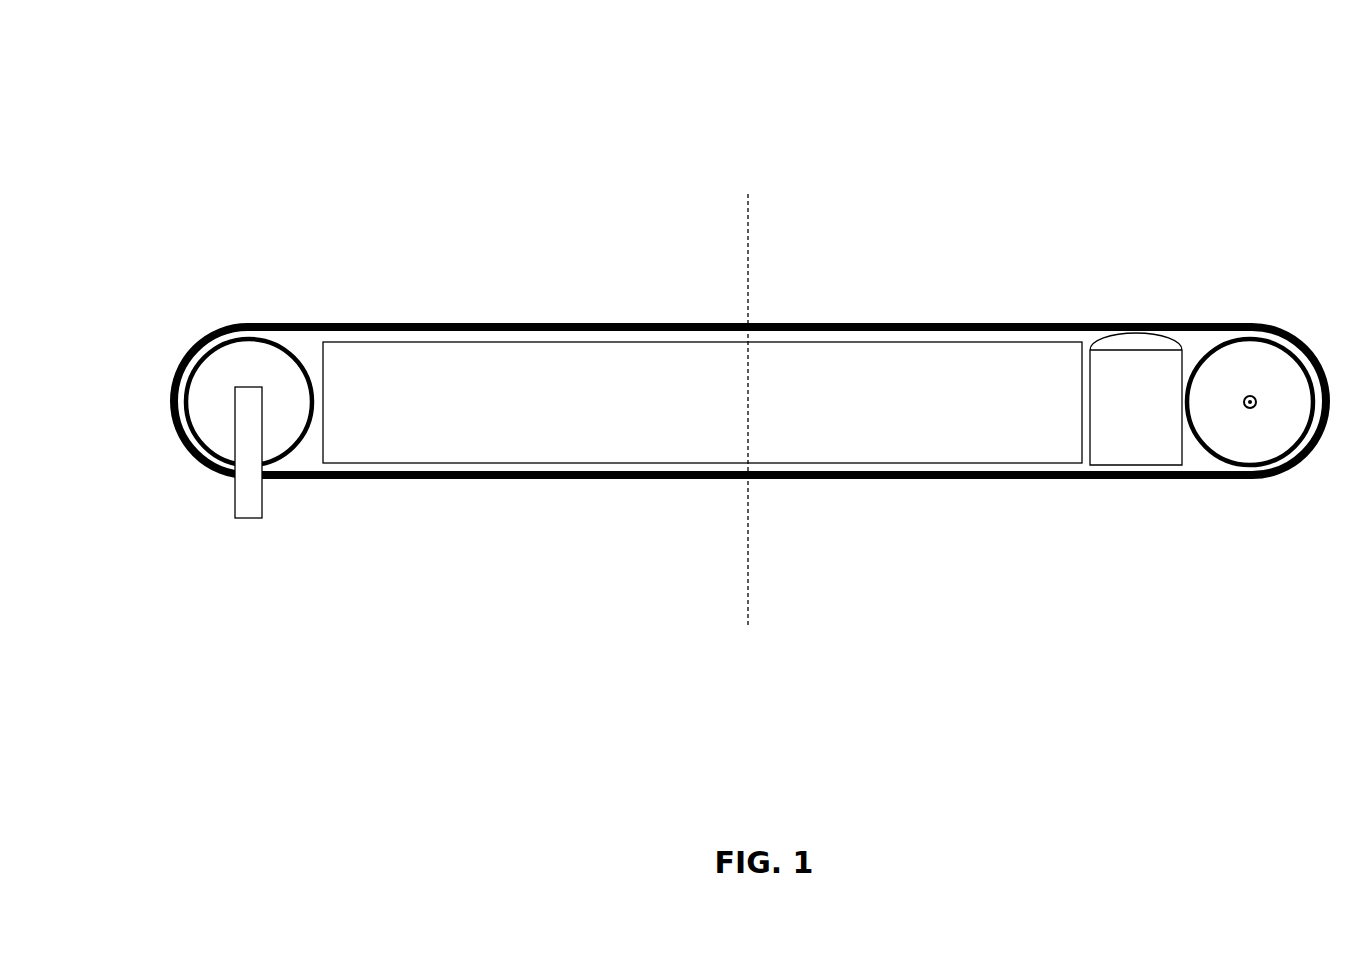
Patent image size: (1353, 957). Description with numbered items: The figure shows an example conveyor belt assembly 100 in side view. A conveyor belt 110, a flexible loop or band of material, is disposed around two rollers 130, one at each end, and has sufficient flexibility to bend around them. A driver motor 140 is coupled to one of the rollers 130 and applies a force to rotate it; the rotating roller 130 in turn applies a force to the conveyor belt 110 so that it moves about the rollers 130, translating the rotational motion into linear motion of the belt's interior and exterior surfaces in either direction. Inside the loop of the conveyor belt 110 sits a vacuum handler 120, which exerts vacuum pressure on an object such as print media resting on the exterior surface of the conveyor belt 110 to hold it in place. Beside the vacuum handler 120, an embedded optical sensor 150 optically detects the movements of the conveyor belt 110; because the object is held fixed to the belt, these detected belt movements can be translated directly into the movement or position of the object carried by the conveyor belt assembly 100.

The conveyor belt assembly 100 is at (150, 99).
The conveyor belt 110 is at (314, 323).
The vacuum handler 120 is at (420, 342).
The rollers 130 is at (222, 344).
The driver motor 140 is at (235, 495).
The embedded optical sensor 150 is at (1100, 334).